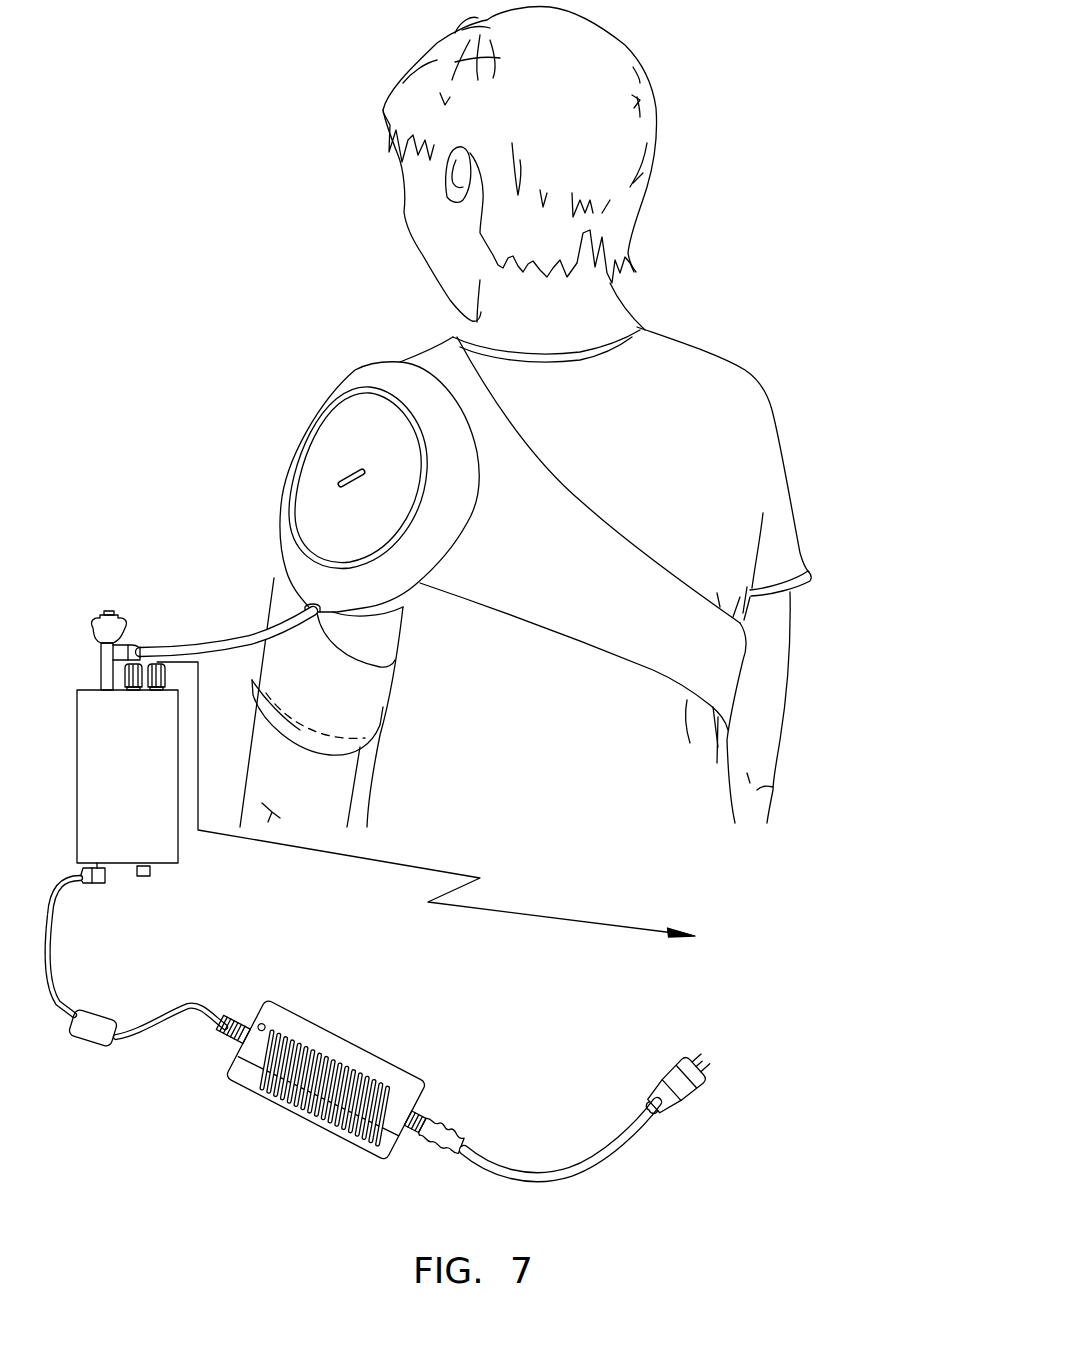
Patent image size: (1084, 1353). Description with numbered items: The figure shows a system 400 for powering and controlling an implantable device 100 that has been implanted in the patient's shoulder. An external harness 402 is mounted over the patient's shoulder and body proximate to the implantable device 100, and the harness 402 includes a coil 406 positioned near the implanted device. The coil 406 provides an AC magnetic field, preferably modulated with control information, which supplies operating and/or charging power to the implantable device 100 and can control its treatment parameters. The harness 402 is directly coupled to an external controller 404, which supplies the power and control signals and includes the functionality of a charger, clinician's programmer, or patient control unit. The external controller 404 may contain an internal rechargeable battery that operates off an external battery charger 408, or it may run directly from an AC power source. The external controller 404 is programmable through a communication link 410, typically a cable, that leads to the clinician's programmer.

The system 400 is at (255, 357).
The implantable device 100 is at (348, 472).
The coil 406 is at (277, 531).
The external harness 402 is at (358, 726).
The external controller 404 is at (178, 848).
The communication link 410 is at (470, 875).
The external battery charger 408 is at (402, 1066).